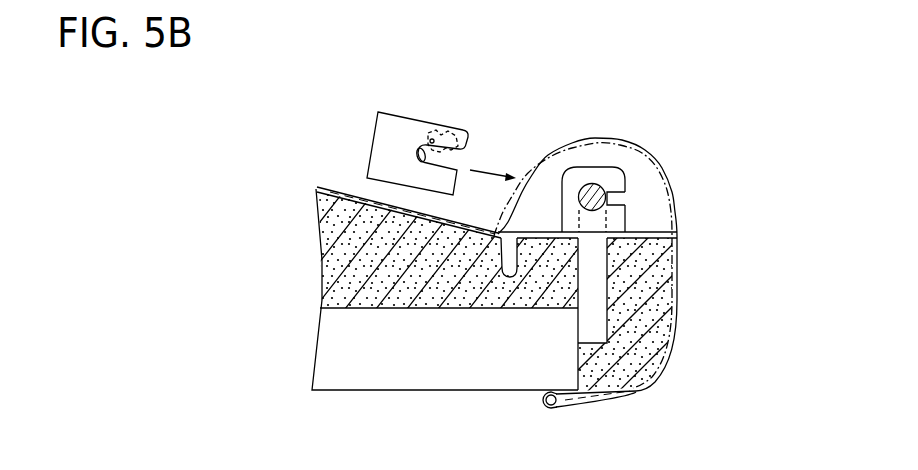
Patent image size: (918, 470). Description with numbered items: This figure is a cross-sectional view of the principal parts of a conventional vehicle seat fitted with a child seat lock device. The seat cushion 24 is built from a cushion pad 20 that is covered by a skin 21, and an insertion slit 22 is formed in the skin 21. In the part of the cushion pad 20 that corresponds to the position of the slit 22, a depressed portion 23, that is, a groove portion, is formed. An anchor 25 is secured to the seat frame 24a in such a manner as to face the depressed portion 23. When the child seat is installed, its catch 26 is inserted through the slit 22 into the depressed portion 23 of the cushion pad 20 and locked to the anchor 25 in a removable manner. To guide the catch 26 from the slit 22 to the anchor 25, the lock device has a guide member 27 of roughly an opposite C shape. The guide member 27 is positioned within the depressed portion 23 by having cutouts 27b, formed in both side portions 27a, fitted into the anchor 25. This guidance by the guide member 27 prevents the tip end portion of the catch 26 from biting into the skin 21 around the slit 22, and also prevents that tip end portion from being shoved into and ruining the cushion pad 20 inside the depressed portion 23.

The cushion pad 20 is at (637, 271).
The skin 21 is at (349, 190).
The insertion slit 22 is at (551, 150).
The depressed portion 23 is at (680, 169).
The seat cushion 24 is at (316, 180).
The seat frame 24a is at (448, 374).
The anchor 25 is at (603, 190).
The catch 26 is at (398, 128).
The guide member 27 is at (611, 167).
The side portions 27a is at (582, 167).
The cutouts 27b is at (627, 203).